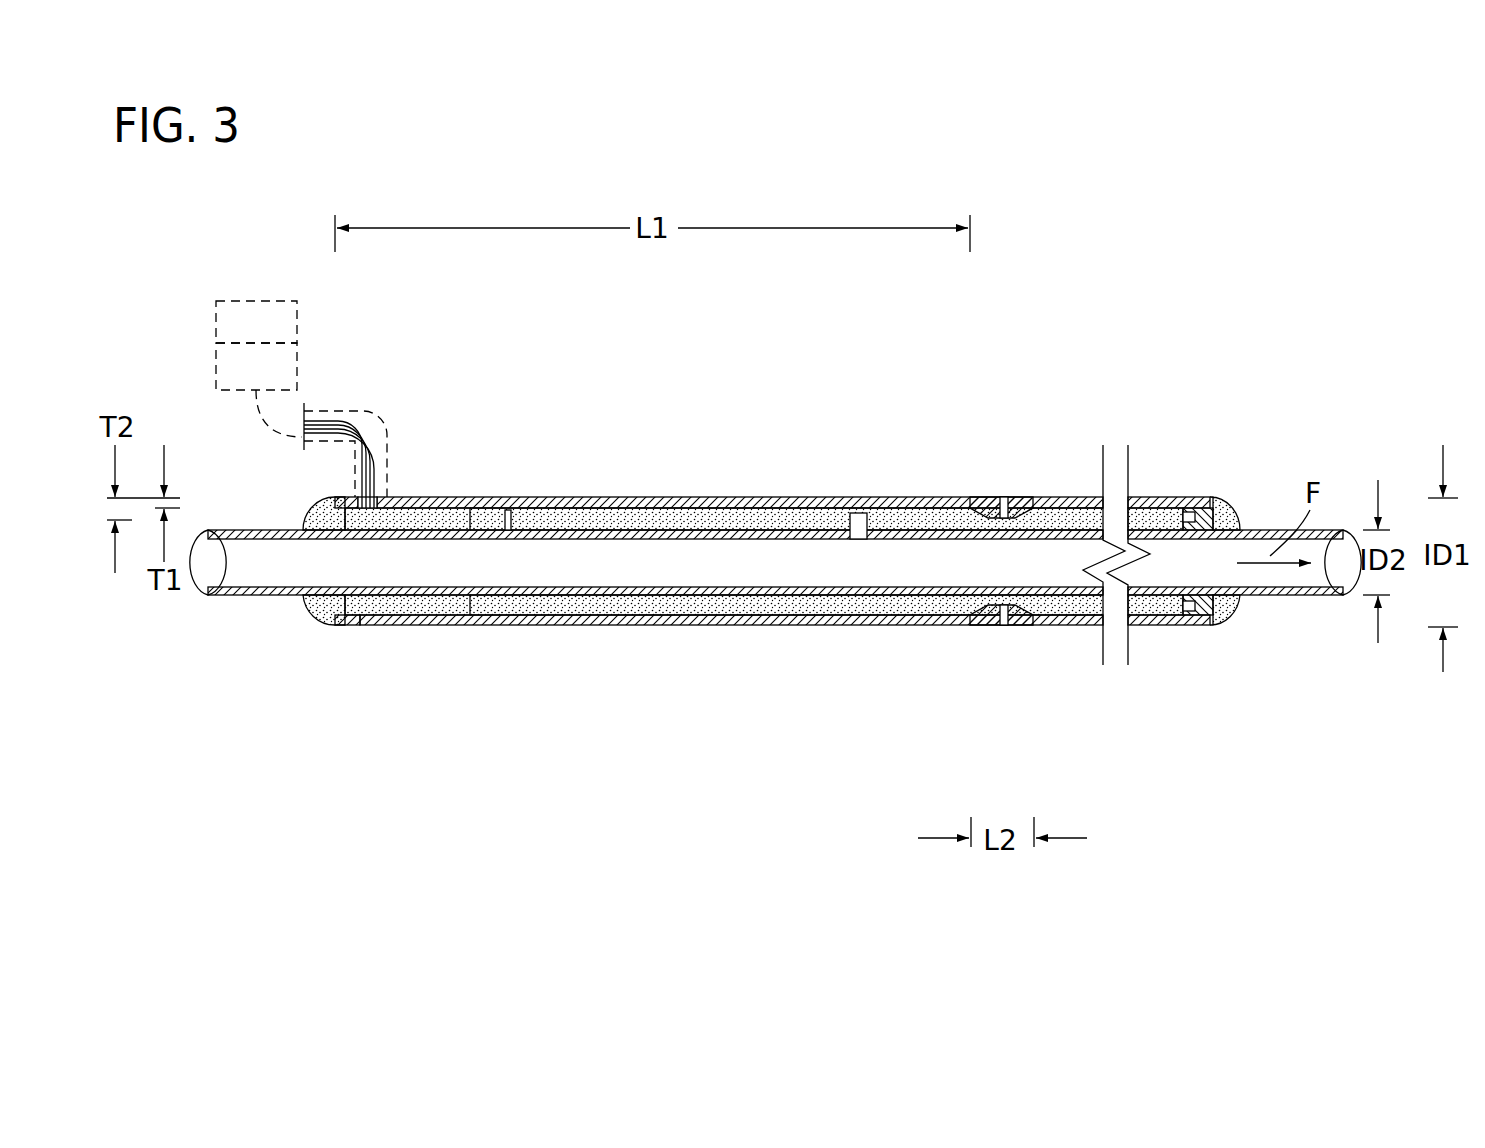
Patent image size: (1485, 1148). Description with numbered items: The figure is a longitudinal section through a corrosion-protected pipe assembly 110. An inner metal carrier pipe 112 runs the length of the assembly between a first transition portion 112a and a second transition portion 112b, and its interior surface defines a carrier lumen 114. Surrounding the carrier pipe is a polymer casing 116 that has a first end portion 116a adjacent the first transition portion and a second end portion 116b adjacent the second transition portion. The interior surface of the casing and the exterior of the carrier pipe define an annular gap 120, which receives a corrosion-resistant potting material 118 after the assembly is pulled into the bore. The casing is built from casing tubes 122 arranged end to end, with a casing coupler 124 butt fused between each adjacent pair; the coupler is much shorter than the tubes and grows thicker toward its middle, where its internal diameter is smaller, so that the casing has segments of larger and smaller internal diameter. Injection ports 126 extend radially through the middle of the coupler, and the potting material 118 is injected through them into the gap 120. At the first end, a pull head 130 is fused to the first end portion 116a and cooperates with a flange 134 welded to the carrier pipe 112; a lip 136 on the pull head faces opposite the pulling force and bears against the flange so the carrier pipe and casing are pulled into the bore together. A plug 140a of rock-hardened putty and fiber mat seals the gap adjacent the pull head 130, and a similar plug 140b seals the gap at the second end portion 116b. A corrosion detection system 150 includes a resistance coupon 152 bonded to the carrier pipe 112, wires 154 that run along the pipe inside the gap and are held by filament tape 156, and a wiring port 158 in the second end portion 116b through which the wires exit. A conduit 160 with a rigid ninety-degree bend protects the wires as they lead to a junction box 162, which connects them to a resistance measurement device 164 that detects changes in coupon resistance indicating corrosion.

The pipe assembly 110 is at (362, 804).
The carrier pipe 112 is at (225, 597).
The first transition portion 112a is at (1305, 597).
The second transition portion 112b is at (228, 530).
The carrier lumen 114 is at (703, 557).
The casing 116 is at (634, 630).
The first end portion of the casing 116a is at (1140, 627).
The second end portion of the casing 116b is at (345, 627).
The potting material 118 is at (830, 600).
The gap 120 is at (420, 607).
The casing tube 122 is at (735, 497).
The casing coupler 124 is at (1018, 627).
The injection port 126 is at (1000, 497).
The pull head 130 is at (1180, 497).
The flange 134 is at (1217, 497).
The lip 136 is at (1216, 617).
The plug 140a is at (1232, 518).
The plug 140b is at (310, 605).
The corrosion detection system 150 is at (367, 358).
The resistance coupon 152 is at (860, 497).
The wires 154 is at (578, 510).
The filament tape 156 is at (508, 512).
The wiring port 158 is at (378, 506).
The conduit 160 is at (390, 432).
The junction box 162 is at (259, 390).
The resistance measurement device 164 is at (256, 322).